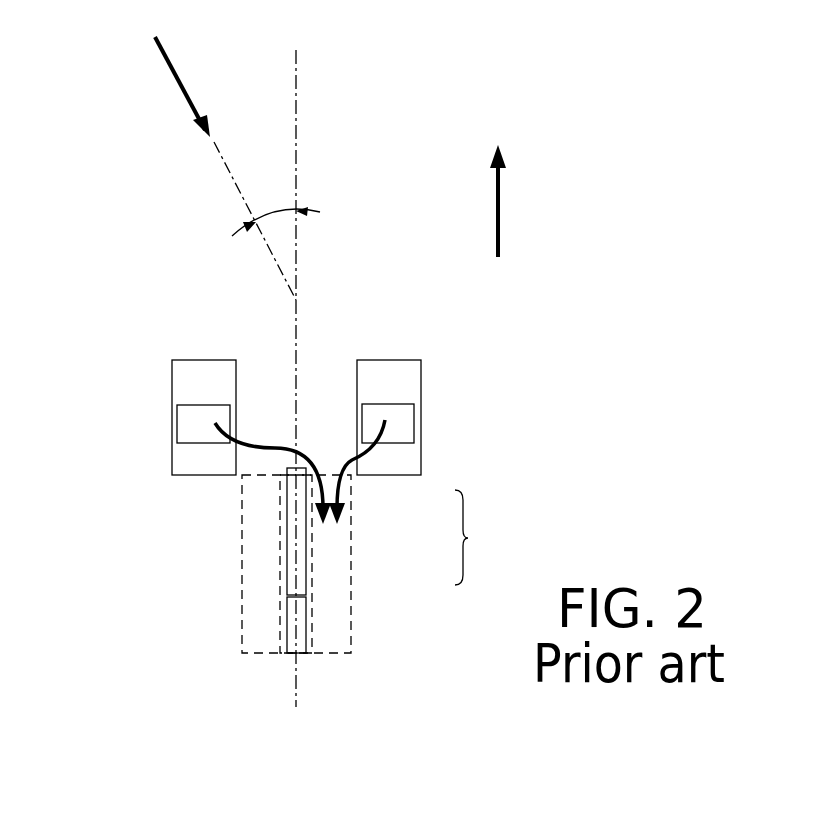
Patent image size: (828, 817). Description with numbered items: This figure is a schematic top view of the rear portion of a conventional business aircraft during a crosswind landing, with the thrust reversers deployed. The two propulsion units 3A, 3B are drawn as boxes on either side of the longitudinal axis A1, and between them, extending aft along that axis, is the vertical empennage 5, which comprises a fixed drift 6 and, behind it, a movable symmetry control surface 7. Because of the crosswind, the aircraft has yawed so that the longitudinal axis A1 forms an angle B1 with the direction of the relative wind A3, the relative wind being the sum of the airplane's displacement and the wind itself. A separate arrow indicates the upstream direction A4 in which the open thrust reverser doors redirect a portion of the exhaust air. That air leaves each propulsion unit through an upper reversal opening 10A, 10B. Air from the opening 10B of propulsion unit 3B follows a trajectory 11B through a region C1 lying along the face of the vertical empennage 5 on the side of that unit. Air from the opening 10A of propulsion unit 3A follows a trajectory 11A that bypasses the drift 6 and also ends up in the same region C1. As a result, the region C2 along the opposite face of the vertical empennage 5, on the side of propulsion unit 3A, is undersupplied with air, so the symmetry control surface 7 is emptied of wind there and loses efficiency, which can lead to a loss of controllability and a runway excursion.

The longitudinal axis A1 is at (297, 63).
The relative wind A3 is at (183, 82).
The angle B1 is at (270, 210).
The upstream direction A4 is at (500, 200).
The propulsion unit 3A is at (188, 368).
The propulsion unit 3B is at (407, 367).
The upper reversal opening 10A is at (177, 413).
The upper reversal opening 10B is at (415, 432).
The trajectory 11A is at (273, 447).
The trajectory 11B is at (343, 450).
The vertical empennage 5 is at (470, 537).
The drift 6 is at (300, 558).
The symmetry control surface 7 is at (300, 625).
The region C1 is at (340, 642).
The region C2 is at (245, 642).